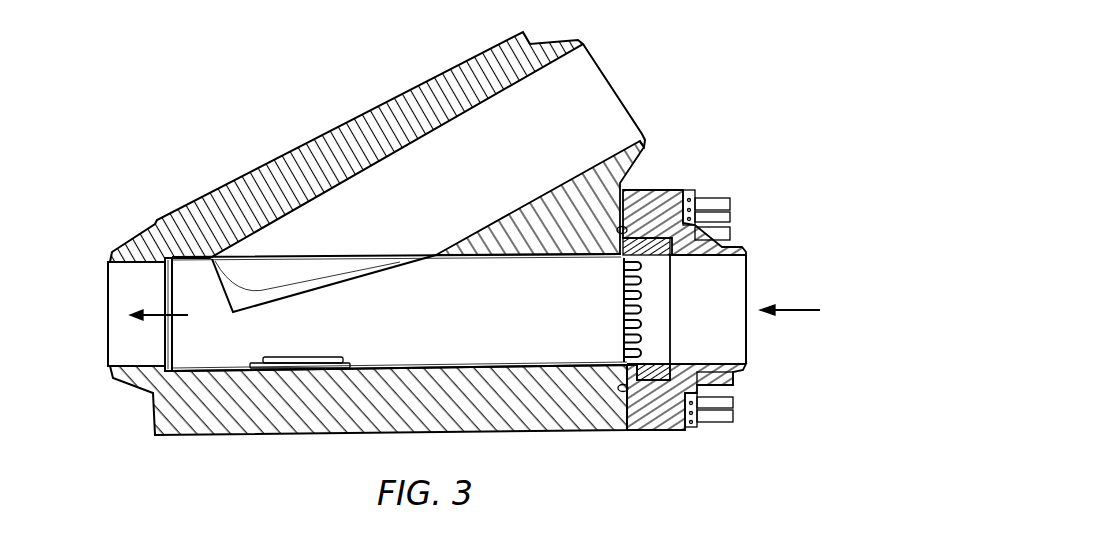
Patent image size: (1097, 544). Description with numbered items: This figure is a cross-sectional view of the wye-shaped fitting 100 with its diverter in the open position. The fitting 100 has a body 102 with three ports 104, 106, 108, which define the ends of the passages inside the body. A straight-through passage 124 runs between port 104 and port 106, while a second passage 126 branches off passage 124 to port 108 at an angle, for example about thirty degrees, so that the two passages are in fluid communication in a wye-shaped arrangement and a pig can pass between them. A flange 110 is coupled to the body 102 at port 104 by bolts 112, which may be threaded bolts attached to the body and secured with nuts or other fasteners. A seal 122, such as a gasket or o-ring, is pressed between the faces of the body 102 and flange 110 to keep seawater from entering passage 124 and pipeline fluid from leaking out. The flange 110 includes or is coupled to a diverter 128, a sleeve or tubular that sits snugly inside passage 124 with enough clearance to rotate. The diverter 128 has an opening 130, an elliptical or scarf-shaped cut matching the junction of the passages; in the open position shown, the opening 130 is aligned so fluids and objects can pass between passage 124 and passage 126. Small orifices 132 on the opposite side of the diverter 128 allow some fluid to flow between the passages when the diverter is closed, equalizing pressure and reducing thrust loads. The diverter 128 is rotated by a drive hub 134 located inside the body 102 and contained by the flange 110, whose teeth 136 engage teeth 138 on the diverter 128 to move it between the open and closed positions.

The fitting 100 is at (193, 120).
The body 102 is at (340, 125).
The port 104 is at (747, 287).
The port 106 is at (107, 327).
The port 108 is at (610, 82).
The flange 110 is at (665, 190).
The bolts 112 is at (713, 198).
The seal 122 is at (623, 227).
The passage 124 is at (479, 327).
The passage 126 is at (470, 193).
The diverter 128 is at (507, 258).
The opening 130 is at (282, 278).
The orifices 132 is at (320, 357).
The drive hub 134 is at (633, 378).
The teeth 136 is at (640, 300).
The teeth 138 is at (628, 332).